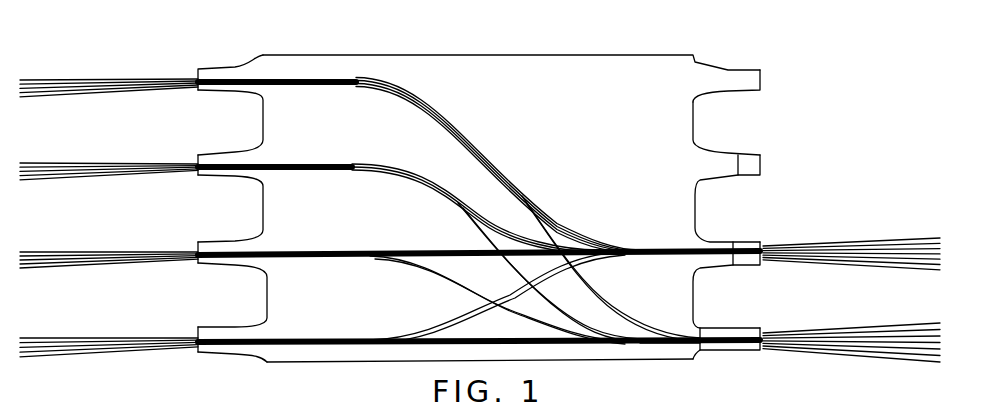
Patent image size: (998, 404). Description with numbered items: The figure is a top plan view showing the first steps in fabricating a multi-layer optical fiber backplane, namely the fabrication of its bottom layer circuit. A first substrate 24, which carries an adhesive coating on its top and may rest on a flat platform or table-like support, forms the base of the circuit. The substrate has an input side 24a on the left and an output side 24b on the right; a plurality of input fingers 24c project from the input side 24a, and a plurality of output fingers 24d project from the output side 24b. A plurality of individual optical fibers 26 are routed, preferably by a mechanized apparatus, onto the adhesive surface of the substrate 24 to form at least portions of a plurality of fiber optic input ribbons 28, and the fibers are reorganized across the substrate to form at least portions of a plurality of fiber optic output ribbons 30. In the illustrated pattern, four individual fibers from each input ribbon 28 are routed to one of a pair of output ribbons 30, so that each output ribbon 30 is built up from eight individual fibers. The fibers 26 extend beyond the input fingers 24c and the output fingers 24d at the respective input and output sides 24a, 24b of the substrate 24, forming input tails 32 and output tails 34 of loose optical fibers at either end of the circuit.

The first substrate 24 is at (595, 78).
The input side 24a is at (263, 205).
The output side 24b is at (695, 130).
The input fingers 24c is at (215, 73).
The output fingers 24d is at (747, 78).
The optical fibers 26 is at (520, 270).
The fiber optic input ribbons 28 is at (291, 155).
The fiber optic output ribbons 30 is at (697, 322).
The input tails 32 is at (77, 95).
The output tails 34 is at (883, 337).